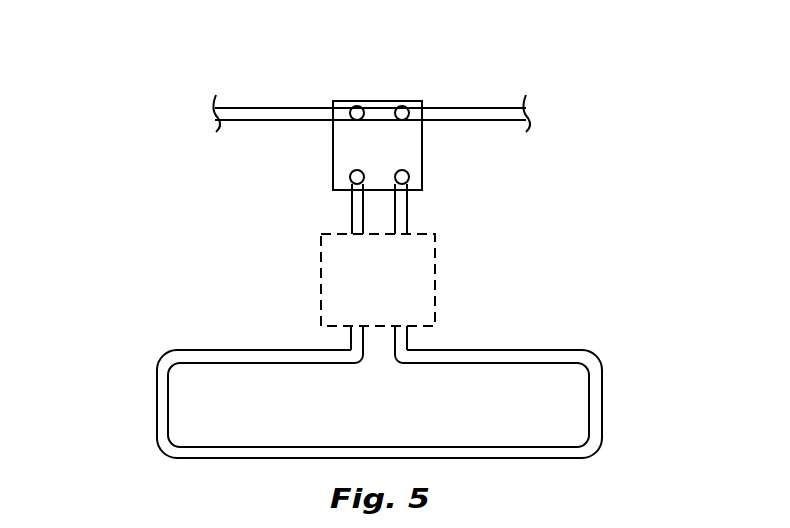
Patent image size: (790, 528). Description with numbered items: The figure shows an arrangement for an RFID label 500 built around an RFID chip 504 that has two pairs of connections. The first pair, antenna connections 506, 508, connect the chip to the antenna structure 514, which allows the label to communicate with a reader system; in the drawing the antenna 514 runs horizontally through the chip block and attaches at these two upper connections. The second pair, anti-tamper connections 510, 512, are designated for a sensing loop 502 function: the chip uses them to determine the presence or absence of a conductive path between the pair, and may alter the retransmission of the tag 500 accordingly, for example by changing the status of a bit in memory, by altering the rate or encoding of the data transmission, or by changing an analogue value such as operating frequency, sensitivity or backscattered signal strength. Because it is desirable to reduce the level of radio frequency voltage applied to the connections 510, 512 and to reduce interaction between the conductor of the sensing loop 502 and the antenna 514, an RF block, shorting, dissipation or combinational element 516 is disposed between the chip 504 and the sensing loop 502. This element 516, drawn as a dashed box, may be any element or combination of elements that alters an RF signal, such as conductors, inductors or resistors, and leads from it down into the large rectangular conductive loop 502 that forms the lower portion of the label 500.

The label 500 is at (108, 40).
The sensing loop 502 is at (226, 357).
The RFID chip 504 is at (375, 120).
The antenna connection 506 is at (356, 107).
The antenna connection 508 is at (404, 107).
The anti-tamper connection 510 is at (351, 183).
The anti-tamper connection 512 is at (408, 176).
The antenna structure 514 is at (262, 110).
The RF block 516 is at (417, 277).